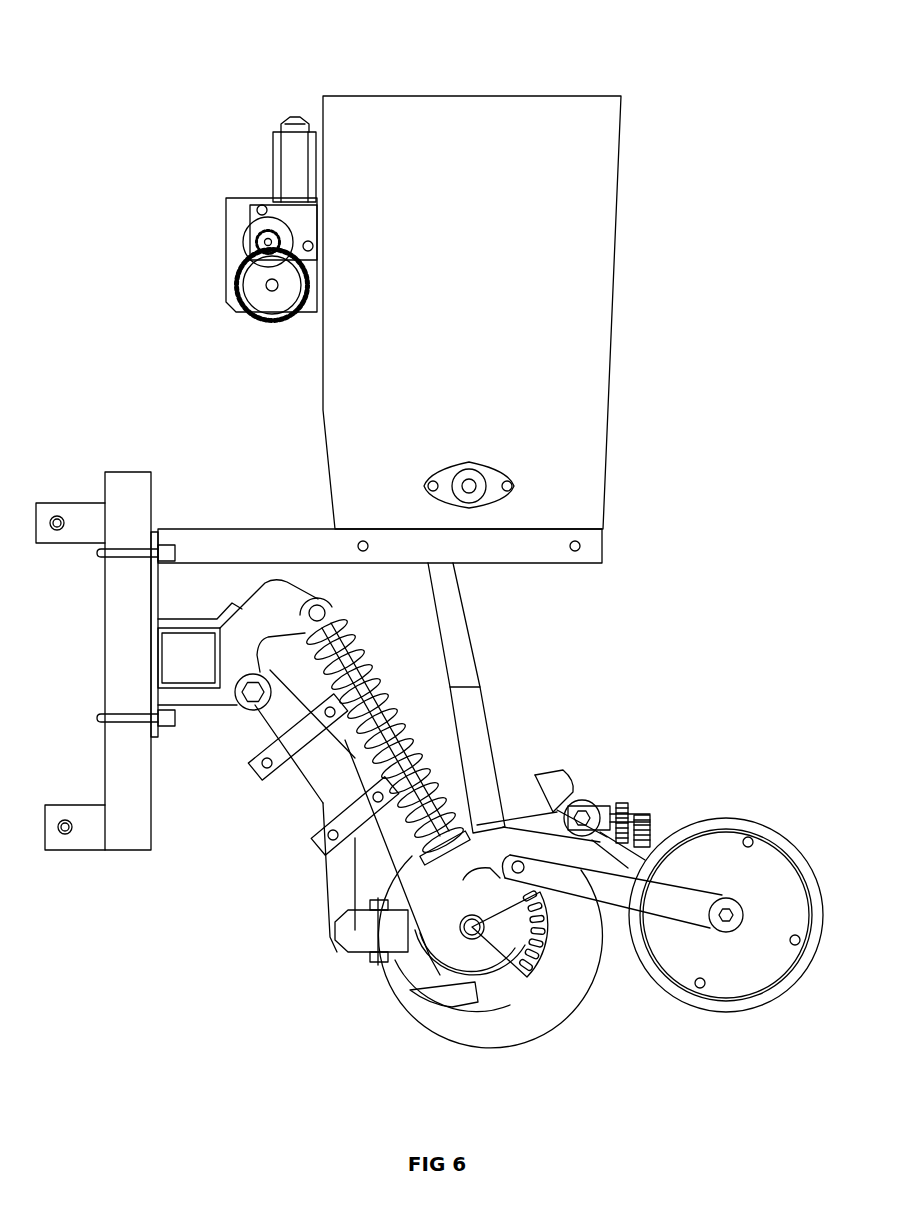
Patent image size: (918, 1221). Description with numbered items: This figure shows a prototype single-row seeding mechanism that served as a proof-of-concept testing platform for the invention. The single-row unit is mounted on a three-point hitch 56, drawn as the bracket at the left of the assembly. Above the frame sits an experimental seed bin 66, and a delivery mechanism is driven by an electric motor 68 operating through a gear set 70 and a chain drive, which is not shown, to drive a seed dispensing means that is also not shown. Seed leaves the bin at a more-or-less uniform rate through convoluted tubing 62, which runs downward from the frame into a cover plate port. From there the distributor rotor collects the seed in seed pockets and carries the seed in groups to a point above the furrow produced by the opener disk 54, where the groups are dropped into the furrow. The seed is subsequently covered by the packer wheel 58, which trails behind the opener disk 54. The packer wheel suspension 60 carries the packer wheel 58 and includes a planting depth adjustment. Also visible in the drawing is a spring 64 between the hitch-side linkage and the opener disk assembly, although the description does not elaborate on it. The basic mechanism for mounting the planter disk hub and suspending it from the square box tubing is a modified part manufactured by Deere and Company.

The opener disk 54 is at (378, 990).
The 3-point hitch 56 is at (135, 852).
The packer wheel 58 is at (763, 822).
The packer wheel suspension 60 is at (615, 798).
The convoluted tubing 62 is at (497, 698).
The down-pressure spring 64 is at (373, 667).
The seed bin 66 is at (632, 230).
The electric motor 68 is at (258, 161).
The gear set 70 is at (262, 327).